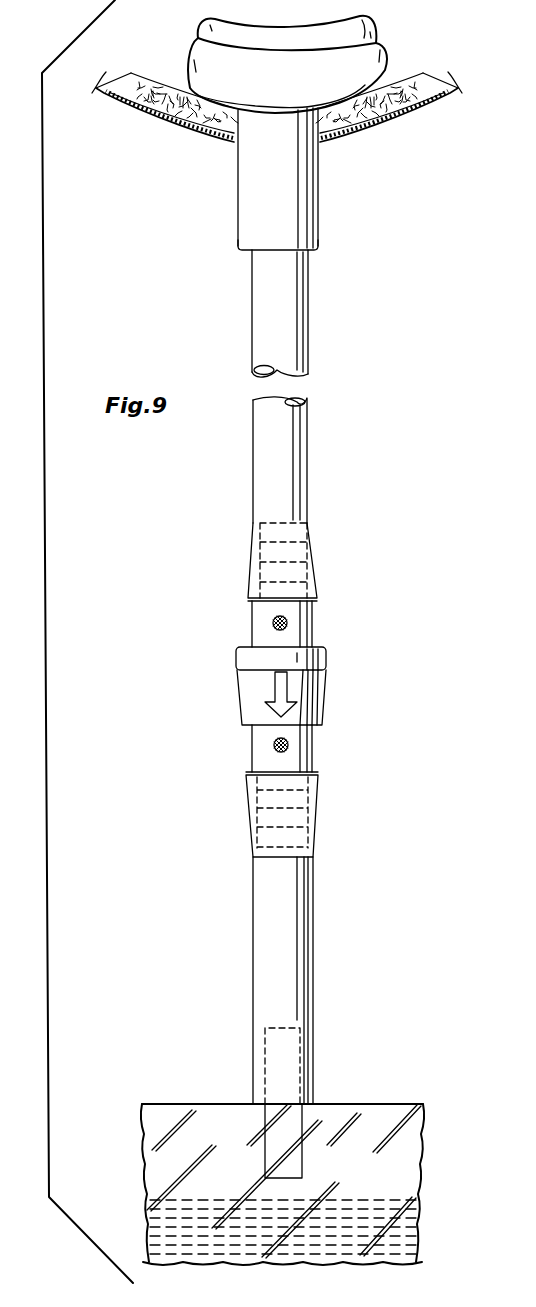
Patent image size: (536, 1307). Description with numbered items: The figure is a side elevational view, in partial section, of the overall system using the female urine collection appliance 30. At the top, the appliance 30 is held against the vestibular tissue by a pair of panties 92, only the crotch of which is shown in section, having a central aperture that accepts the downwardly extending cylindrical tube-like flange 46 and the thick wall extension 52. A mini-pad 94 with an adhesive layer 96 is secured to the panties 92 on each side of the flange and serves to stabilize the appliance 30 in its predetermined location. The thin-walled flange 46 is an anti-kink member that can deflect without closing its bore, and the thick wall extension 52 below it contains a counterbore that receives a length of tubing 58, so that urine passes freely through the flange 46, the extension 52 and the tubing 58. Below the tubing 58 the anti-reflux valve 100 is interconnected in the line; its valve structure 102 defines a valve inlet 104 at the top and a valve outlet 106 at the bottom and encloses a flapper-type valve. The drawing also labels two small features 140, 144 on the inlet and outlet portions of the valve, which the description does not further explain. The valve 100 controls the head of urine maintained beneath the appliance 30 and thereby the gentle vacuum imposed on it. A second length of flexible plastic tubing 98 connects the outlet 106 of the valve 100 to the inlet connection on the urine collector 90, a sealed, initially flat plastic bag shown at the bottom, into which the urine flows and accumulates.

The appliance 30 is at (176, 45).
The cylindrical tube-like flange 46 is at (262, 143).
The thick wall extension 52 is at (238, 229).
The tubing 58 is at (252, 325).
The urine collector bag 90 is at (374, 1118).
The panties 92 is at (453, 90).
The mini-pad 94 is at (417, 77).
The adhesive layer 96 is at (410, 133).
The flexible plastic tubing 98 is at (253, 912).
The anti-reflux valve 100 is at (300, 683).
The valve structure 102 is at (238, 692).
The valve inlet 104 is at (250, 608).
The valve outlet 106 is at (251, 756).
The upper locking hole 140 is at (273, 623).
The lower locking hole 144 is at (272, 745).